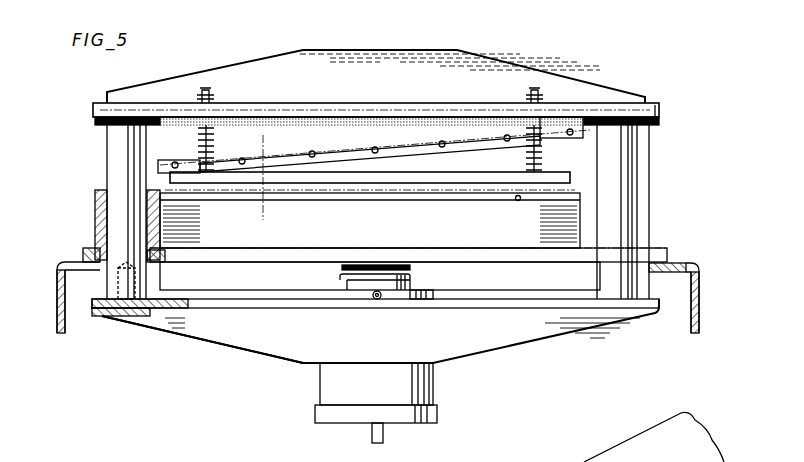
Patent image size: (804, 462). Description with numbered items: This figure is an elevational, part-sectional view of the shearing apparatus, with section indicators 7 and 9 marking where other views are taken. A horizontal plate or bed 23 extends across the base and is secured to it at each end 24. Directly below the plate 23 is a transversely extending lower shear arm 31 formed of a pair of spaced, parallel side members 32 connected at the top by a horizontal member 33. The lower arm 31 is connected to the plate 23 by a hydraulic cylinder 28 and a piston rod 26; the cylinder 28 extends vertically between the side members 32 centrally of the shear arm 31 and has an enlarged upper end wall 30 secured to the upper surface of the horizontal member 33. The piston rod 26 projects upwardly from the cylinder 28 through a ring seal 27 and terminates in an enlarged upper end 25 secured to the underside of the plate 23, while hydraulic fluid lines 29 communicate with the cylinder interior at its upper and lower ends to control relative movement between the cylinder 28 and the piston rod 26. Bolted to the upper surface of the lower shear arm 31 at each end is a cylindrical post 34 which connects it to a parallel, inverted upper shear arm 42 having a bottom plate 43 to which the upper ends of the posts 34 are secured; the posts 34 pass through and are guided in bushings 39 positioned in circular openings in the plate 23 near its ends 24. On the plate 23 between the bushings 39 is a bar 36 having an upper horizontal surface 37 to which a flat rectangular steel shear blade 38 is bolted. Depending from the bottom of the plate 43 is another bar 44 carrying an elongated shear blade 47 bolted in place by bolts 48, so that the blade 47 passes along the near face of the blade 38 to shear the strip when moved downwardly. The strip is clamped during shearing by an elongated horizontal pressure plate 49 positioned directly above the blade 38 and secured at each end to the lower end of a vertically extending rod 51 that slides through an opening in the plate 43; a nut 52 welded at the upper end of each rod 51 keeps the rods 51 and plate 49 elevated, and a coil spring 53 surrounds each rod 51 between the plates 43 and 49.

The upper shear arm 42 is at (217, 64).
The bottom plate 43 is at (270, 106).
The bar 44 is at (318, 128).
The nut 52 is at (216, 100).
The coil spring 53 is at (213, 131).
The rod 51 is at (210, 150).
The shear blade 47 is at (470, 141).
The bolts 48 is at (375, 148).
The pressure plate 49 is at (405, 180).
The shear blade 38 is at (462, 196).
The upper horizontal surface 37 is at (515, 200).
The bar 36 is at (513, 243).
The cylindrical post 34 is at (117, 160).
The bushing 39 is at (96, 213).
The end 24 is at (85, 256).
The horizontal plate or bed 23 is at (232, 258).
The horizontal member 33 is at (160, 300).
The side member 32 is at (165, 322).
The lower shear arm 31 is at (229, 352).
The hydraulic cylinder 28 is at (331, 389).
The hydraulic fluid lines 29 is at (377, 300).
The enlarged upper end 25 is at (380, 263).
The piston rod 26 is at (348, 285).
The ring seal 27 is at (412, 285).
The enlarged upper end wall 30 is at (437, 295).
The section line 7- 7 is at (263, 135).
The section line 9- 9 is at (420, 461).